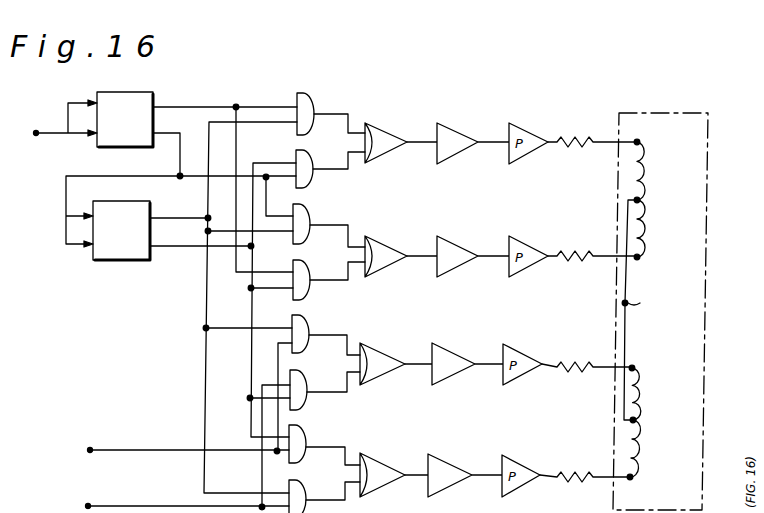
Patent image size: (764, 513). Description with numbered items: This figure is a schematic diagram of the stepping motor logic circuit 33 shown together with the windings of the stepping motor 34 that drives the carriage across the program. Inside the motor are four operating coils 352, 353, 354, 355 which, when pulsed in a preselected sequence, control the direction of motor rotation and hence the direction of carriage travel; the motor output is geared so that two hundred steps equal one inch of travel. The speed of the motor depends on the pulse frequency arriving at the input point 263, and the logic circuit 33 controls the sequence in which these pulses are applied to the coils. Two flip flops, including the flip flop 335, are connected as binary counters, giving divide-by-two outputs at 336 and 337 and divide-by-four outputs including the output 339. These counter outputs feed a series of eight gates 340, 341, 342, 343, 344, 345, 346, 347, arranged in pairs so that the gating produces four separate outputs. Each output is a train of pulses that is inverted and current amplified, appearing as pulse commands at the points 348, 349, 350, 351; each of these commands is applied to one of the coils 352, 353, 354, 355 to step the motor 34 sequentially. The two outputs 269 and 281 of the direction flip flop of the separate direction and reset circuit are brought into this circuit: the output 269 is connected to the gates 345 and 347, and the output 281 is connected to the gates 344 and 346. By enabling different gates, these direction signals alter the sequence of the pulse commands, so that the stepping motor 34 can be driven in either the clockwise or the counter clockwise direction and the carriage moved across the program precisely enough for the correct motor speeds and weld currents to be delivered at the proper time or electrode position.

The pulse frequency point 263 is at (46, 136).
The stepping motor drive circuit 33 is at (184, 355).
The stepping motor 34 is at (682, 311).
The output of direction flip flop 281 is at (168, 402).
The output of direction flip flop 269 is at (162, 449).
The flip flop 335 is at (118, 251).
The divide by 2 output 336 is at (197, 107).
The divide by 2 output 337 is at (170, 217).
The divide by four output 339 is at (131, 93).
The gate 340 is at (308, 95).
The gate 341 is at (302, 153).
The gate 342 is at (308, 205).
The gate 343 is at (303, 261).
The gate 344 is at (308, 320).
The gate 345 is at (302, 372).
The gate 346 is at (308, 426).
The gate 347 is at (300, 482).
The pulse command point 348 is at (550, 140).
The pulse command point 349 is at (552, 254).
The pulse command point 350 is at (549, 364).
The pulse command point 351 is at (547, 474).
The operating coil 352 is at (650, 147).
The operating coil 353 is at (647, 209).
The operating coil 354 is at (634, 380).
The operating coil 355 is at (640, 462).